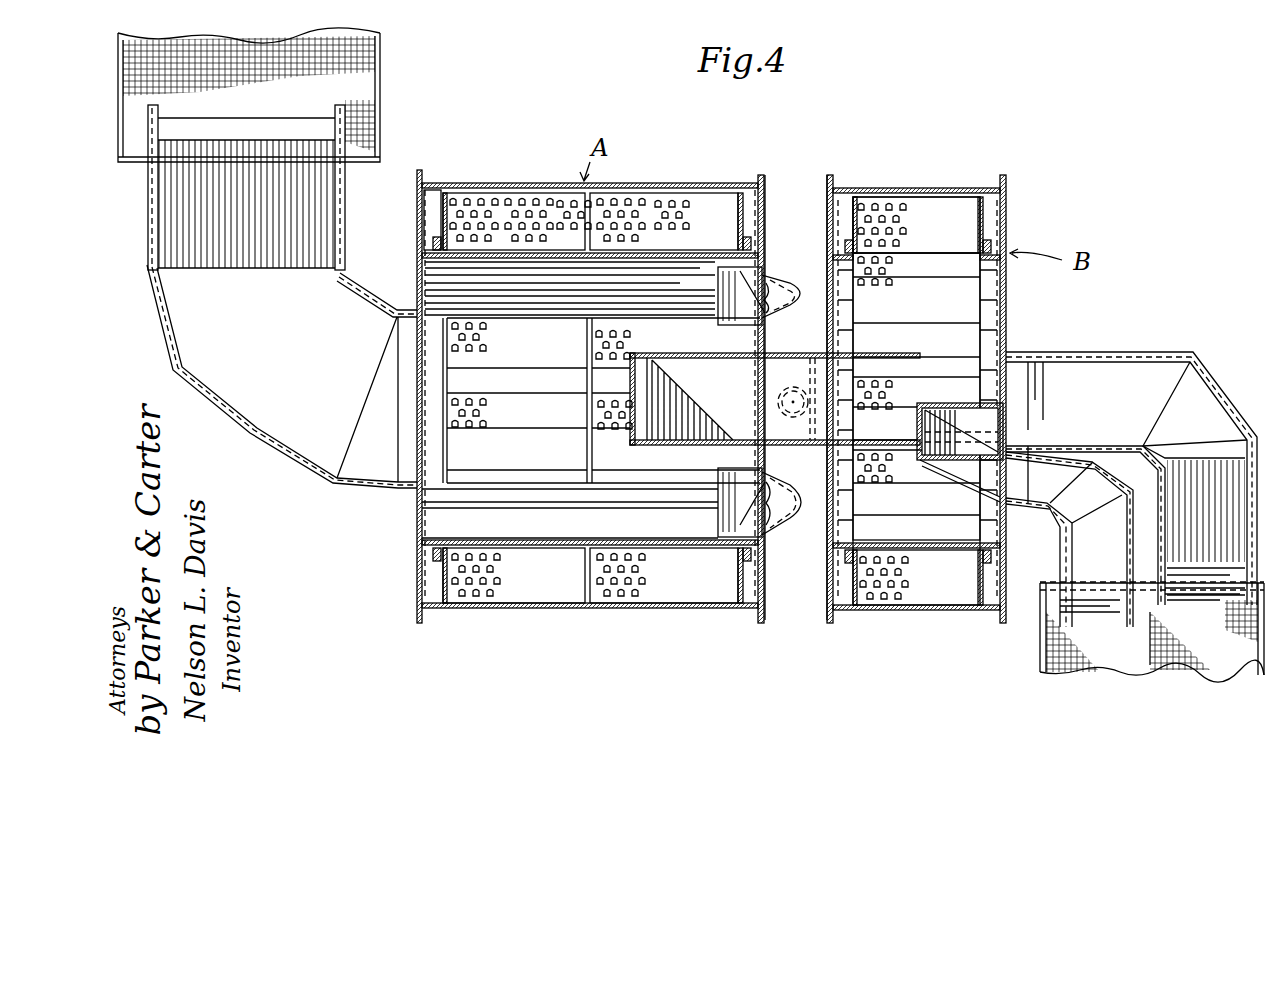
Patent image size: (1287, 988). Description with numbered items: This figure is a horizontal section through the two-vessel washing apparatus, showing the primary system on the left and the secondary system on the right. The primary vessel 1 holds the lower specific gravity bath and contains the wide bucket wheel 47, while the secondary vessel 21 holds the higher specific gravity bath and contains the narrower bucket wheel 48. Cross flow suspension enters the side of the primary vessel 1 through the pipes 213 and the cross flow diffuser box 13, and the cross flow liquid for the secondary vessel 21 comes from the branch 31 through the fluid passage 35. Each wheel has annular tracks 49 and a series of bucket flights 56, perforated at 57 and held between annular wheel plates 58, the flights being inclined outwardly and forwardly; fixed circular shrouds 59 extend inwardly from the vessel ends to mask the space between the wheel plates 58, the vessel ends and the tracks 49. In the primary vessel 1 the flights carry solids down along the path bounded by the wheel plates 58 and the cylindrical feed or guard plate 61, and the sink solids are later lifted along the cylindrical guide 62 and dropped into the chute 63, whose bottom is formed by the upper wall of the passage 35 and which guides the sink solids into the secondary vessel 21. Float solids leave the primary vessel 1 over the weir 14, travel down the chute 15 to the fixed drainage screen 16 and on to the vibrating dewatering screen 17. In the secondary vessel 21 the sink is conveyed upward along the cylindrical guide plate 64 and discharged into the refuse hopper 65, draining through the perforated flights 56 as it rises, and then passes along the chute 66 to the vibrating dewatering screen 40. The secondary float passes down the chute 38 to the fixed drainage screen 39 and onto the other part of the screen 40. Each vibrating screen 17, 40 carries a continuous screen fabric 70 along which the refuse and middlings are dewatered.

The primary vessel 1 is at (645, 176).
The cross flow diffuser box 13 is at (748, 296).
The weir 14 is at (415, 465).
The chute 15 is at (348, 305).
The fixed drainage screen 16 is at (330, 205).
The vibrating mechanical dewatering screen 17 is at (380, 92).
The secondary vessel 21 is at (908, 180).
The branch pipe 31 is at (780, 395).
The fluid passage 35 is at (634, 383).
The chute 38 is at (1083, 380).
The fixed drainage screen 39 is at (1236, 524).
The vibrating dewatering screen 40 is at (1040, 662).
The bucket wheel 47 is at (441, 194).
The bucket wheel 48 is at (985, 207).
The annular tracks 49 is at (432, 242).
The bucket flights 56 is at (478, 196).
The perforations 57 is at (540, 194).
The annular wheel plates 58 is at (442, 208).
The fixed circular shrouds 59 is at (423, 424).
The cylindrical feed or guard plate 61 is at (572, 540).
The cylindrical guide 62 is at (572, 270).
The chute 63 is at (780, 355).
The cylindrical guide plate 64 is at (904, 540).
The refuse hopper 65 is at (930, 420).
The chute 66 is at (1080, 540).
The screen fabric 70 is at (290, 42).
The pipes 213 is at (792, 292).